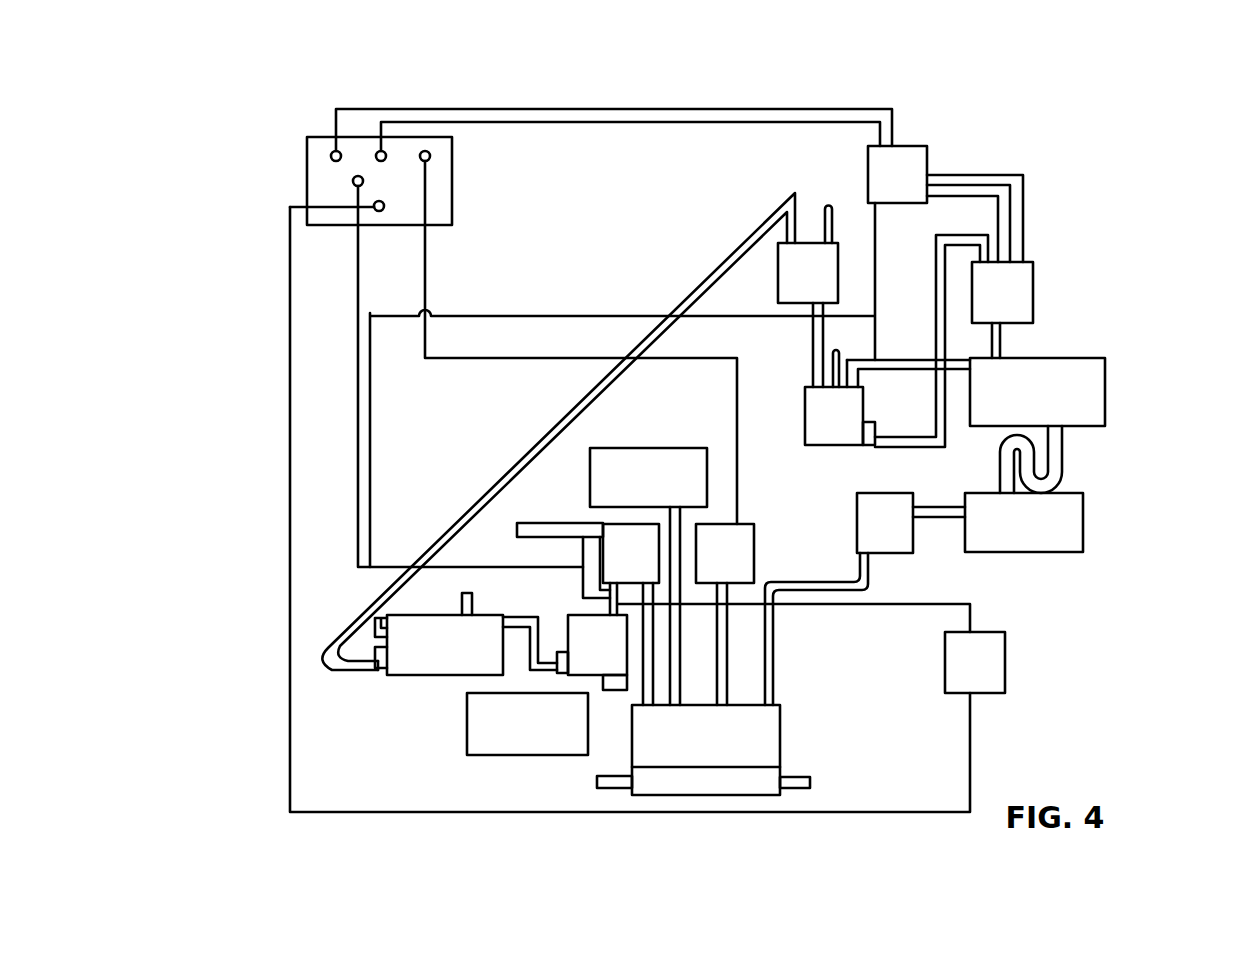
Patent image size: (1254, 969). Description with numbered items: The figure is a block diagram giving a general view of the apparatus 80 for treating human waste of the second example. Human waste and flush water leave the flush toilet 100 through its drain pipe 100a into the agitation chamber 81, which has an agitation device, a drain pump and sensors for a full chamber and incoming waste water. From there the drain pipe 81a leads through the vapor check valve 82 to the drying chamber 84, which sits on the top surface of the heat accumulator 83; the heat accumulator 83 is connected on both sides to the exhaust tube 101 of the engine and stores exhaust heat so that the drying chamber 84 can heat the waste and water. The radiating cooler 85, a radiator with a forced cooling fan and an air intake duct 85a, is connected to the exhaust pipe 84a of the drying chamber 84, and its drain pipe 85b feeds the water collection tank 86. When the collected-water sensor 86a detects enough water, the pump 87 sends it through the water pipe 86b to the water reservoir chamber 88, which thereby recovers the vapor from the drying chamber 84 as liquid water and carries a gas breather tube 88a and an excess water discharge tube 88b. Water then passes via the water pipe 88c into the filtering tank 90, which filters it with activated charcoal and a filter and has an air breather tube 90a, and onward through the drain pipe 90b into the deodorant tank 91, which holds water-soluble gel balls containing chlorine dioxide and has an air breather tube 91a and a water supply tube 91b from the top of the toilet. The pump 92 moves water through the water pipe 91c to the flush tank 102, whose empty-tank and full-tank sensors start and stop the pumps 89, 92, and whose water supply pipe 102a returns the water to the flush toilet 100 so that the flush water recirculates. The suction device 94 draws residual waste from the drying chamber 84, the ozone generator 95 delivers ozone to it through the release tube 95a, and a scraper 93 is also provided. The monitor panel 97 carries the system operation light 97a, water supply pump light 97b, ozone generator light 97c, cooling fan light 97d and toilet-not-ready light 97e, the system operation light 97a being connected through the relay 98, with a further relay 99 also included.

The apparatus for treating human waste 80 is at (1007, 125).
The agitation chamber 81 is at (1083, 535).
The drain pipe 81a is at (940, 505).
The vapor check valve 82 is at (900, 555).
The heat accumulator 83 is at (757, 795).
The drying chamber 84 is at (780, 735).
The exhaust pipe 84a is at (680, 620).
The radiating cooler 85 is at (623, 523).
The air intake duct 85a is at (520, 521).
The drain pipe 85b is at (598, 590).
The water collection tank 86 is at (572, 613).
The collected-water sensor 86a is at (615, 690).
The water pipe 86b is at (530, 657).
The pump 87 is at (558, 652).
The water reservoir chamber 88 is at (382, 675).
The gas breather tube 88a is at (462, 600).
The excess water discharge tube 88b is at (377, 632).
The water pipe 88c is at (320, 658).
The pump 89 is at (380, 673).
The filtering tank 90 is at (778, 265).
The air breather tube 90a is at (820, 210).
The drain pipe 90b is at (813, 345).
The deodorant tank 91 is at (805, 432).
The air breather tube 91a is at (848, 358).
The water supply tube 91b is at (953, 363).
The water pipe 91c is at (977, 236).
The pump 92 is at (875, 448).
The scraper 93 is at (483, 757).
The suction device 94 is at (672, 448).
The ozone generator 95 is at (754, 550).
The release tube 95a is at (727, 665).
The monitor panel 97 is at (453, 183).
The system operation light 97a is at (331, 156).
The water supply pump light 97b is at (378, 150).
The ozone generator light 97c is at (428, 150).
The cooling fan light 97d is at (353, 180).
The "toilet not ready" light 97e is at (380, 211).
The relay 98 is at (868, 175).
The relay 99 is at (1005, 663).
The flush toilet 100 is at (1105, 403).
The drain pipe 100a is at (1063, 462).
The exhaust tube 101 is at (620, 788).
The flush tank 102 is at (1033, 280).
The water supply pipe 102a is at (1000, 333).